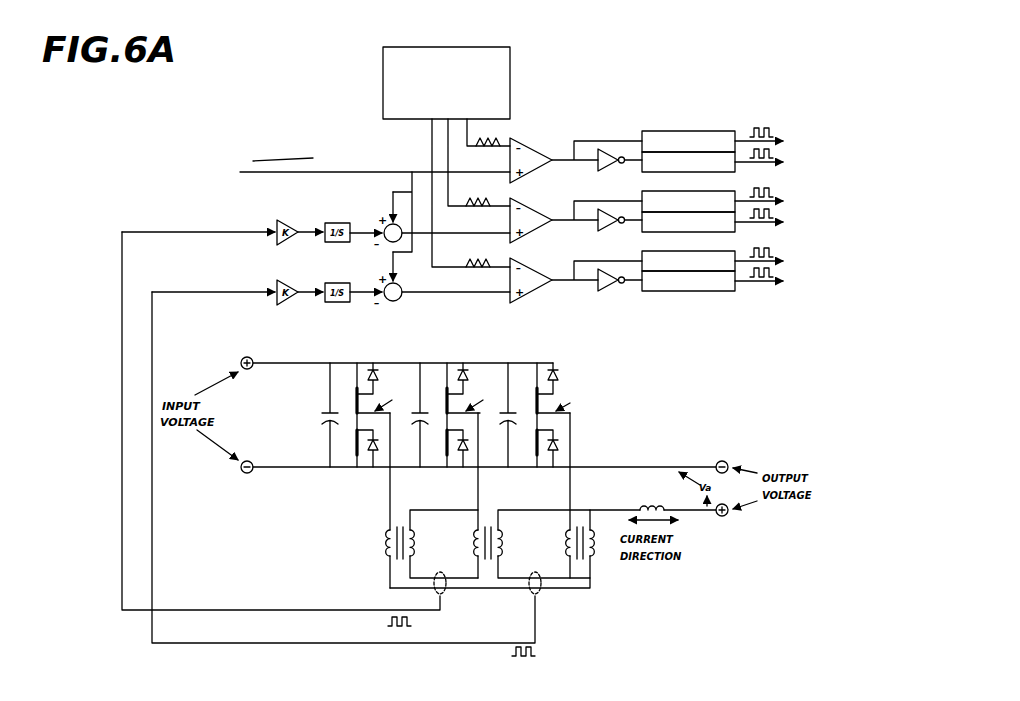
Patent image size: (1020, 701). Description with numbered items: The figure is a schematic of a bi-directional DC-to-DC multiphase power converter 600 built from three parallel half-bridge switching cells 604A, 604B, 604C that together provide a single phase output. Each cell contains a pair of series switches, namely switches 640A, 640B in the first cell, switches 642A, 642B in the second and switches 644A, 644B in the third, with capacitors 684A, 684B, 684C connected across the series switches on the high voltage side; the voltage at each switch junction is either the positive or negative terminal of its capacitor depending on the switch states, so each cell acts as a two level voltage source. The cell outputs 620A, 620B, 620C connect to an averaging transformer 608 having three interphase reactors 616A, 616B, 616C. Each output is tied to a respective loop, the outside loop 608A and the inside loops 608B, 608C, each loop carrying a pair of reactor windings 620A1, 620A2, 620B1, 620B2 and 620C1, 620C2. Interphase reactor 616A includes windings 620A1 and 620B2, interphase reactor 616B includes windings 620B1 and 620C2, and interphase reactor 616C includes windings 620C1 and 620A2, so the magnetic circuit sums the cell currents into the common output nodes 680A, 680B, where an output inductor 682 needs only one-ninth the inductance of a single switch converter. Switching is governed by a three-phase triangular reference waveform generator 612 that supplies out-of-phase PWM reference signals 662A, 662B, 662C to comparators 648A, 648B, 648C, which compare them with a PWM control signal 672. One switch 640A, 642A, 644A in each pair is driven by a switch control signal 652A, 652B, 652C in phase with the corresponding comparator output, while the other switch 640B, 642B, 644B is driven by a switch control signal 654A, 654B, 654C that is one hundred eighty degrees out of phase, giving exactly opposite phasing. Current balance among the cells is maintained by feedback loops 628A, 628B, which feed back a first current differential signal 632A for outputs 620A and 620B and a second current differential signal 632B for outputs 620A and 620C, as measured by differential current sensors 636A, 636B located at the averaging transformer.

The bi-directional DC-to-DC multiphase power converter 600 is at (776, 95).
The switching cell 604A is at (349, 355).
The switching cell 604B is at (446, 354).
The switching cell 604C is at (544, 351).
The averaging transformer 608 is at (443, 526).
The outside loop 608A is at (582, 601).
The inside loop 608B is at (443, 513).
The inside loop 608C is at (566, 525).
The reference waveform generator 612 is at (510, 61).
The interphase reactor 616A is at (398, 514).
The interphase reactor 616B is at (488, 517).
The interphase reactor 616C is at (577, 613).
The output 620A is at (372, 469).
The reactor winding 620A1 is at (404, 547).
The reactor winding 620A2 is at (578, 552).
The output 620B is at (590, 467).
The reactor winding 620B1 is at (472, 553).
The reactor winding 620B2 is at (425, 588).
The output 620C is at (611, 467).
The reactor winding 620C1 is at (594, 552).
The reactor winding 620C2 is at (510, 566).
The feedback loop 628A is at (116, 410).
The second feedback loop 628B is at (146, 482).
The first current differential signal 632A is at (386, 622).
The second current differential signal 632B is at (514, 652).
The differential current sensor 636A is at (438, 597).
The differential current sensor 636B is at (539, 597).
The switch 640A is at (353, 396).
The switch 640B is at (353, 447).
The switch 642A is at (442, 383).
The switch 642B is at (387, 482).
The switch 644A is at (558, 389).
The switch 644B is at (574, 450).
The comparator 648A is at (546, 148).
The comparator 648B is at (546, 208).
The comparator 648C is at (546, 296).
The switch control signal 652A is at (773, 129).
The switch control signal 652B is at (773, 189).
The switch control signal 652C is at (773, 249).
The switch control signal 654A is at (778, 153).
The switch control signal 654B is at (778, 213).
The switch control signal 654C is at (778, 273).
The PWM reference signal 662A is at (492, 138).
The PWM reference signal 662B is at (468, 198).
The PWM reference signal 662C is at (492, 259).
The PWM control signal 672 is at (277, 159).
The output node 680A is at (728, 463).
The output node 680B is at (725, 517).
The output inductor 682 is at (696, 510).
The capacitor 684A is at (321, 412).
The capacitor 684B is at (420, 411).
The capacitor 684C is at (508, 411).